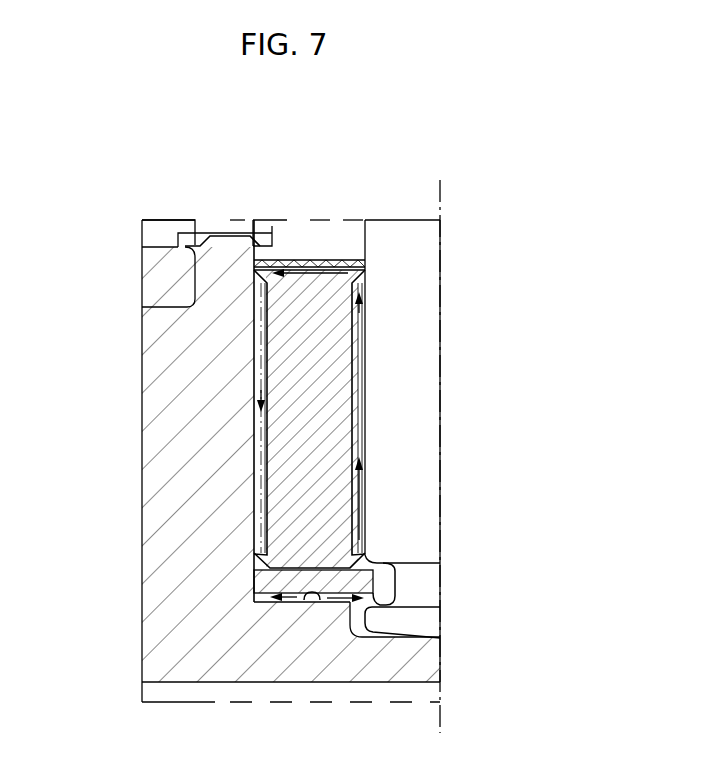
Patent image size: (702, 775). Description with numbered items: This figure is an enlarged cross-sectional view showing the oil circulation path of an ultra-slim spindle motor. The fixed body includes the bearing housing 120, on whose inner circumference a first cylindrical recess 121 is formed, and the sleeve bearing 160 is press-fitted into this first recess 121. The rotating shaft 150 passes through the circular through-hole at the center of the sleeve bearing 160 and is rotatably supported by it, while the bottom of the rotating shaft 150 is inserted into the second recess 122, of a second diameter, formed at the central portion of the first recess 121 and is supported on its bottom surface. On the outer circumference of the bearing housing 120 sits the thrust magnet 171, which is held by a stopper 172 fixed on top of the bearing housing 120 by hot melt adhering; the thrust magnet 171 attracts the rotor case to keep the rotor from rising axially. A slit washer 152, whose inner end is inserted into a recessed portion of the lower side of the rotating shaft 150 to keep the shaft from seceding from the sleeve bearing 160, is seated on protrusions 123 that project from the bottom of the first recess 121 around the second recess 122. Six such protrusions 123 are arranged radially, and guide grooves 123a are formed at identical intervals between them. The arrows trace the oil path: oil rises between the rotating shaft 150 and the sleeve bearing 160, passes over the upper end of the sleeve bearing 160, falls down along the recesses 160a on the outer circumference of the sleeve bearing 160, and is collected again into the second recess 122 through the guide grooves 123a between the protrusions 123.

The bearing housing 120 is at (165, 466).
The first recess 121 is at (253, 488).
The second recess 122 is at (367, 630).
The protrusion 123 is at (330, 597).
The guide groove 123a is at (316, 601).
The rotating shaft 150 is at (402, 248).
The slit washer 152 is at (360, 585).
The sleeve bearing 160 is at (277, 387).
The recess 160a is at (266, 418).
The thrust magnet 171 is at (162, 258).
The stopper 172 is at (268, 240).